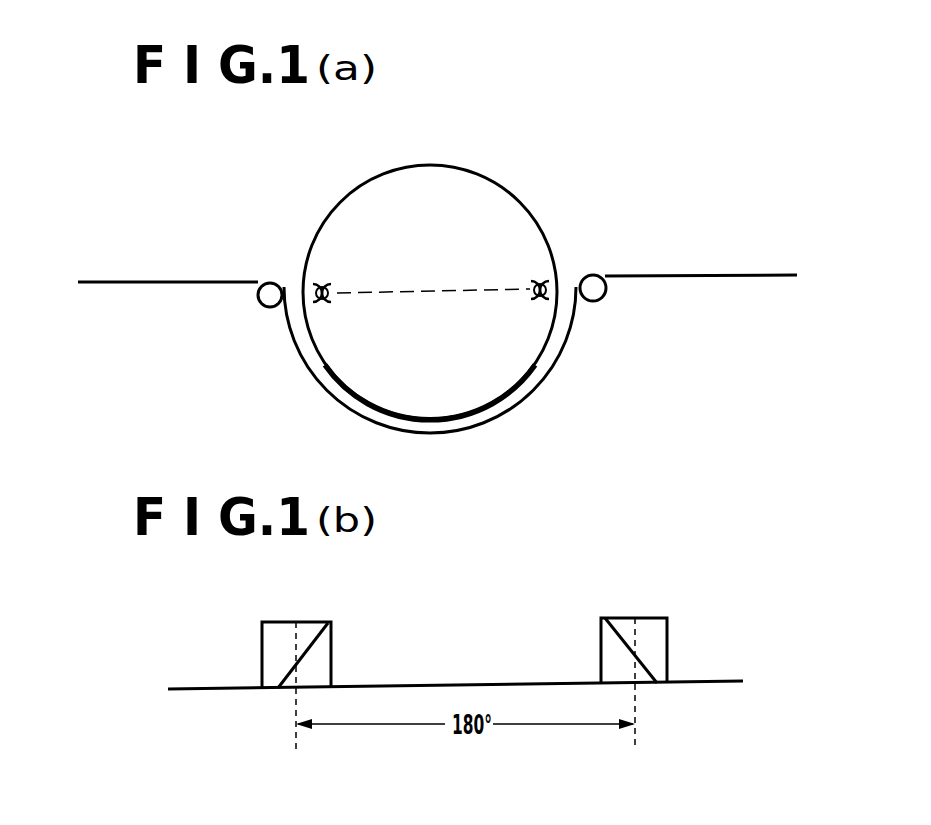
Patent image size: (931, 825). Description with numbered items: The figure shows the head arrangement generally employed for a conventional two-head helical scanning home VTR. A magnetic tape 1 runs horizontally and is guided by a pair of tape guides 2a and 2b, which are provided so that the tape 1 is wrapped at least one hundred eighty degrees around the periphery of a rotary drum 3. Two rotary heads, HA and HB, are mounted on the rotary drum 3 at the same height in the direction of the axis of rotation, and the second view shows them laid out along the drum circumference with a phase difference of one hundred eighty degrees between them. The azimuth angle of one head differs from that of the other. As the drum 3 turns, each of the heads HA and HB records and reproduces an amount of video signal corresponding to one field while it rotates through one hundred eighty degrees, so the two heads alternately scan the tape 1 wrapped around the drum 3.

The magnetic tape 1 is at (673, 275).
The tape guide 2a is at (268, 307).
The tape guide 2b is at (598, 301).
The rotary drum 3 is at (503, 184).